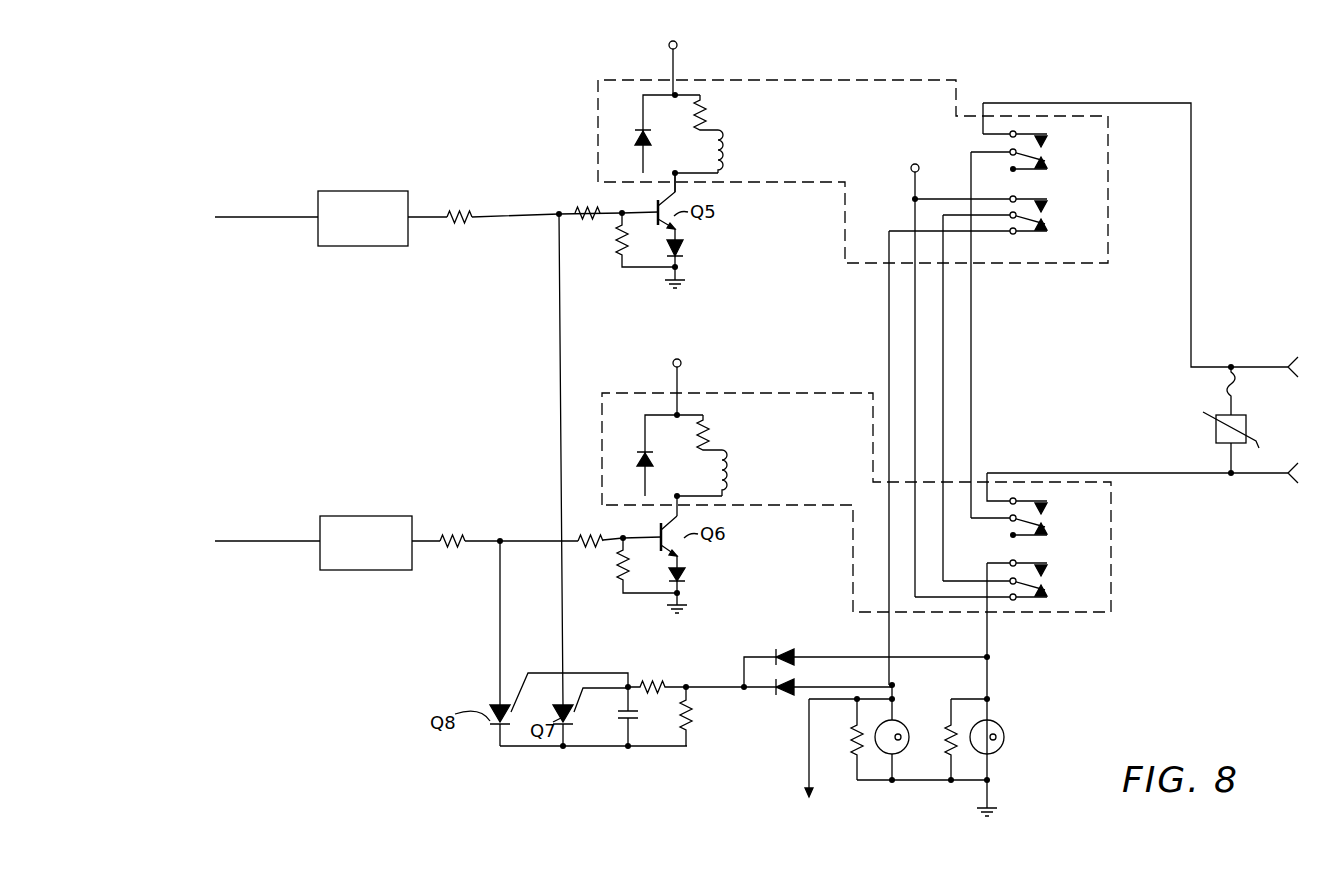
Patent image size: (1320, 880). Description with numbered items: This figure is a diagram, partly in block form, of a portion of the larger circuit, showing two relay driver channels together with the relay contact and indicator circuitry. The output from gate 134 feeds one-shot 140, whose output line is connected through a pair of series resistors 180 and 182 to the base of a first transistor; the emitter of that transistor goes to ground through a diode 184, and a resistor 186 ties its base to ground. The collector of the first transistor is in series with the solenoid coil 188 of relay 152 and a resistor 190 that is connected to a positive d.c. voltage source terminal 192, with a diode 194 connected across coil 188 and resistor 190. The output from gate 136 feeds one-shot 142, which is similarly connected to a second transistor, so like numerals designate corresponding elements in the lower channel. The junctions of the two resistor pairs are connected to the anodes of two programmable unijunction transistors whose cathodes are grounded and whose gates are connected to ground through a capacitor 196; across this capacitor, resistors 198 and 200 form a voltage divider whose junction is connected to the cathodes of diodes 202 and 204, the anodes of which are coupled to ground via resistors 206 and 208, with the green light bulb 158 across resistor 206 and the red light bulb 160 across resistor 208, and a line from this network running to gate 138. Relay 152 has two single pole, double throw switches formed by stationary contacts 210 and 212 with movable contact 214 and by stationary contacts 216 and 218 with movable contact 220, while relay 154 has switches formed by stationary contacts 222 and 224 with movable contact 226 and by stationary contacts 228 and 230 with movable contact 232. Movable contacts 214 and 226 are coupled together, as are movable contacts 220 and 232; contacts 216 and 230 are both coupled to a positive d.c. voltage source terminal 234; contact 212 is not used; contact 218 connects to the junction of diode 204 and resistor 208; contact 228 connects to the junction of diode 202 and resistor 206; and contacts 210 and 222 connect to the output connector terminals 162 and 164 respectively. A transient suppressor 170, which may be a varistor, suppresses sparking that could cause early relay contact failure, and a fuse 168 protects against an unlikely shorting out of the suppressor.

The gate 134 is at (211, 220).
The gate 136 is at (212, 544).
The gate 138 is at (803, 780).
The one-shot 140 is at (376, 191).
The one-shot 142 is at (376, 516).
The relay 152 is at (893, 78).
The relay 154 is at (1114, 577).
The green light bulb 158 is at (1006, 737).
The red light bulb 160 is at (907, 727).
The output connector terminal 162 is at (1288, 367).
The output connector terminal 164 is at (1285, 475).
The fuse 168 is at (1225, 390).
The transient suppressor 170 is at (1250, 433).
The resistor 180 is at (458, 208).
The resistor 182 is at (592, 208).
The diode 184 is at (688, 249).
The resistor 186 is at (615, 248).
The solenoid coil 188 is at (727, 154).
The resistor 190 is at (708, 113).
The positive d.c. voltage source terminal 192 is at (679, 45).
The diode 194 is at (650, 137).
The capacitor 196 is at (640, 715).
The resistor 198 is at (648, 684).
The resistor 200 is at (691, 715).
The diode 202 is at (788, 648).
The diode 204 is at (796, 682).
The resistor 206 is at (942, 740).
The resistor 208 is at (852, 739).
The stationary contact 210 is at (1049, 143).
The stationary contact 212 is at (1048, 170).
The movable contact 214 is at (1047, 161).
The stationary contact 216 is at (1049, 208).
The stationary contact 218 is at (1048, 232).
The movable contact 220 is at (1047, 224).
The stationary contact 222 is at (1049, 510).
The stationary contact 224 is at (1048, 537).
The movable contact 226 is at (1047, 527).
The stationary contact 228 is at (1049, 573).
The stationary contact 230 is at (1048, 598).
The movable contact 232 is at (1047, 590).
The positive d.c. voltage source terminal 234 is at (908, 168).